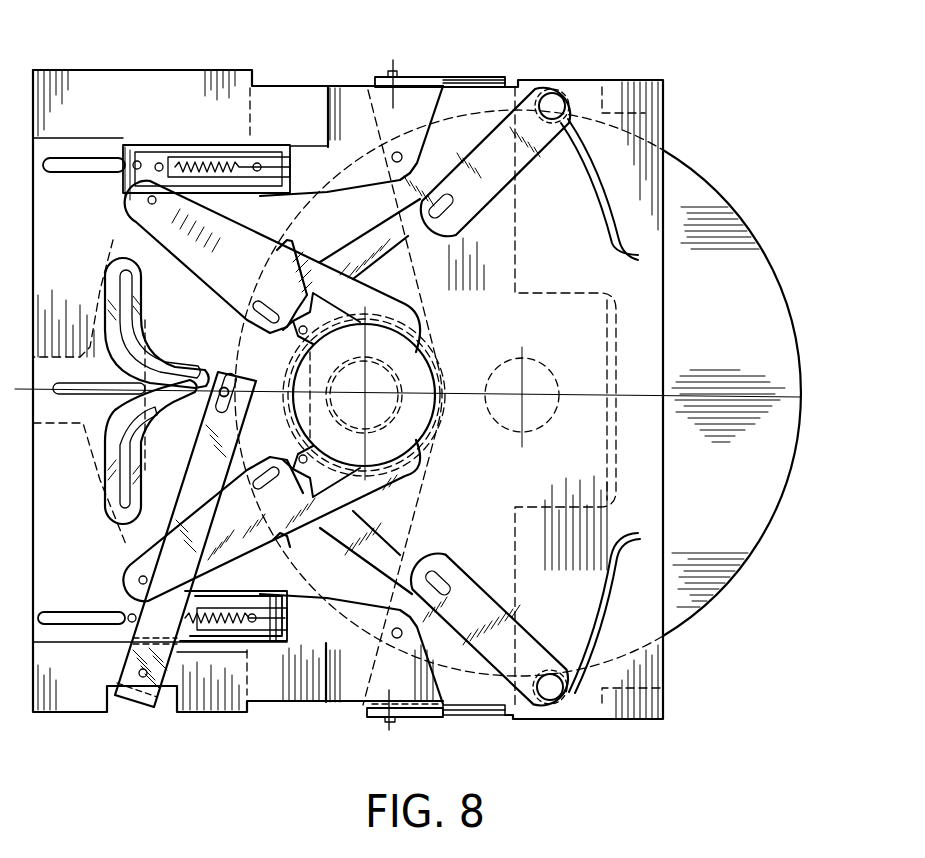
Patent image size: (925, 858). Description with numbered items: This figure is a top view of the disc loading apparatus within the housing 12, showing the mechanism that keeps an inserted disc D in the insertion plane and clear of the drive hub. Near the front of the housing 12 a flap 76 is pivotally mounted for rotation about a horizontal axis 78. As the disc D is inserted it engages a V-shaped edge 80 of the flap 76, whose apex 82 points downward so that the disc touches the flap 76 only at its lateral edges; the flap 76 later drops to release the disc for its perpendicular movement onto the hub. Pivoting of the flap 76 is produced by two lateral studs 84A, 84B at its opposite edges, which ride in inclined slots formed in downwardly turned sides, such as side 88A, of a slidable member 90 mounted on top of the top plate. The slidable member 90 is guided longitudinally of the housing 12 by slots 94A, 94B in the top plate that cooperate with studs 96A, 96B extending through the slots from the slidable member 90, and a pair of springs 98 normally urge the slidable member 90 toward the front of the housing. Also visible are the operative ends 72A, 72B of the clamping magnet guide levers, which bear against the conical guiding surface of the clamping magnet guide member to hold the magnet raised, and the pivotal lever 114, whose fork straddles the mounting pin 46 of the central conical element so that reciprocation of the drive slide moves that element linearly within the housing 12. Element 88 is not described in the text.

The housing 12 is at (670, 336).
The disc D is at (728, 204).
The mounting pin 46 is at (223, 388).
The operative end 72A is at (417, 480).
The operative end 72B is at (417, 316).
The flap 76 is at (487, 253).
The horizontal axis 78 is at (607, 277).
The V-shaped edge 80 is at (351, 395).
The apex 82 is at (447, 385).
The lateral stud 84A is at (388, 721).
The lateral stud 84B is at (400, 72).
The upper mounting plate 88 is at (504, 78).
The downwardly turned side 88A is at (485, 718).
The slidable member 90 is at (354, 105).
The slot 94A is at (54, 614).
The slot 94B is at (73, 164).
The stud 96A is at (132, 621).
The stud 96B is at (139, 161).
The spring 98 is at (235, 165).
The pivotal lever 114 is at (222, 486).